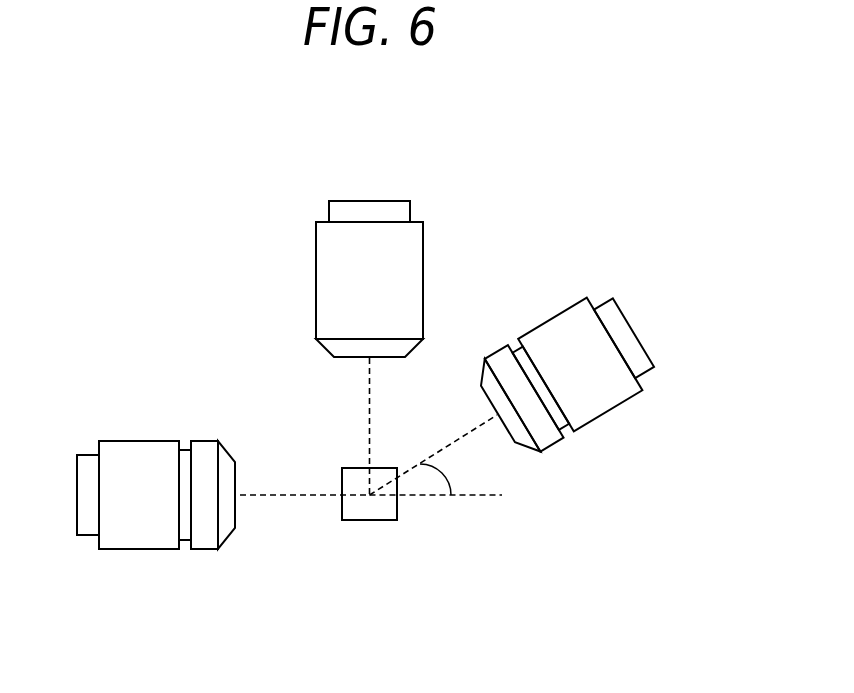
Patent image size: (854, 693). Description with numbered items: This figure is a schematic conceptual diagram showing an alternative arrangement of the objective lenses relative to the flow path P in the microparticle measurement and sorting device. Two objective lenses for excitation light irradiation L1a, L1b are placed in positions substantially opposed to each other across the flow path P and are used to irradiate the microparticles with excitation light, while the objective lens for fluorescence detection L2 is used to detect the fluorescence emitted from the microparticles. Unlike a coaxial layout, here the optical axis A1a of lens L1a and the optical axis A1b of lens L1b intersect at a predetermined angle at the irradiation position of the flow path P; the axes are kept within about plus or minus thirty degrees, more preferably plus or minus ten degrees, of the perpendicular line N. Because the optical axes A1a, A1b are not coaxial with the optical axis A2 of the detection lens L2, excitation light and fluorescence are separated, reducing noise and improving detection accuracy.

The objective lens for fluorescence detection L2 is at (371, 210).
The objective lens for excitation light irradiation L1a is at (133, 460).
The objective lens for excitation light irradiation L1b is at (617, 312).
The optical axis of the objective lens for fluorescence detection A2 is at (392, 426).
The optical axis of the objective lens for excitation light irradiation L1a A1a is at (305, 515).
The optical axis of the objective lens for excitation light irradiation L1b A1b is at (434, 440).
The perpendicular line N is at (447, 495).
The flow path P is at (375, 512).